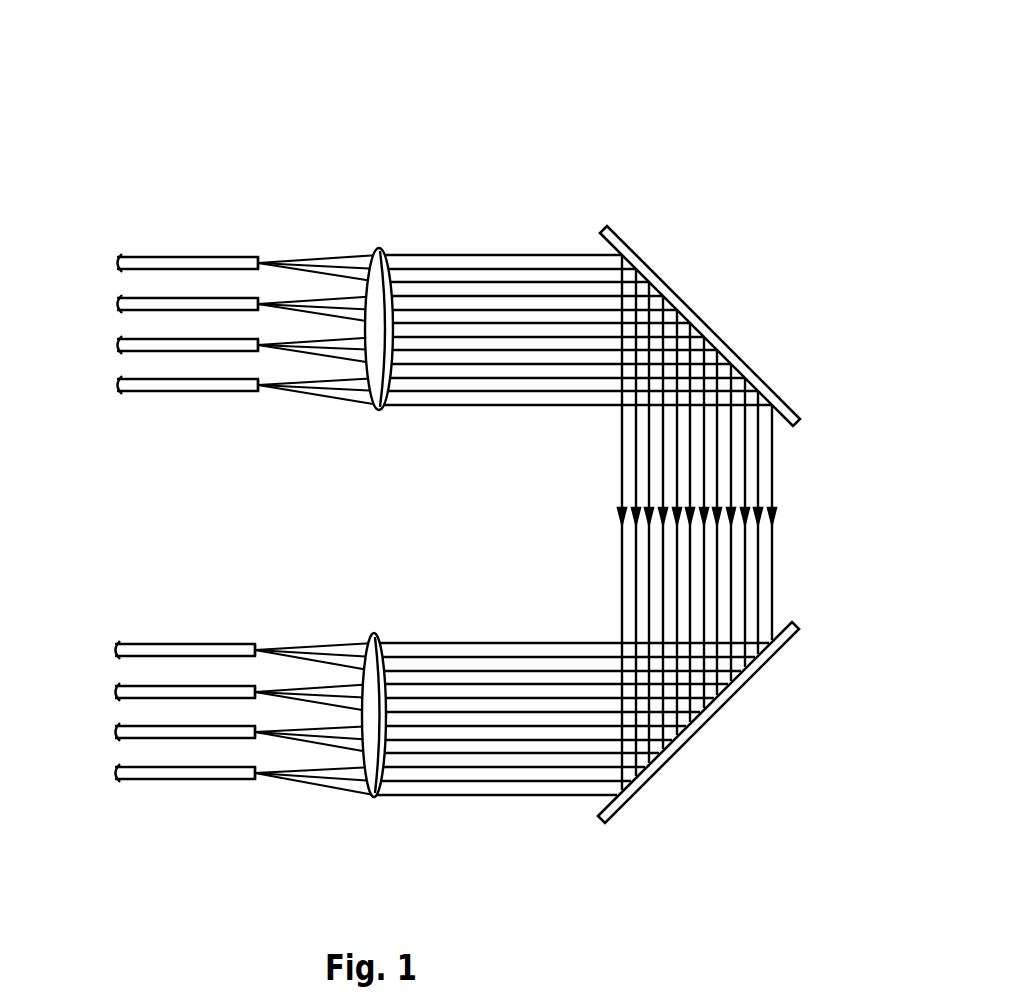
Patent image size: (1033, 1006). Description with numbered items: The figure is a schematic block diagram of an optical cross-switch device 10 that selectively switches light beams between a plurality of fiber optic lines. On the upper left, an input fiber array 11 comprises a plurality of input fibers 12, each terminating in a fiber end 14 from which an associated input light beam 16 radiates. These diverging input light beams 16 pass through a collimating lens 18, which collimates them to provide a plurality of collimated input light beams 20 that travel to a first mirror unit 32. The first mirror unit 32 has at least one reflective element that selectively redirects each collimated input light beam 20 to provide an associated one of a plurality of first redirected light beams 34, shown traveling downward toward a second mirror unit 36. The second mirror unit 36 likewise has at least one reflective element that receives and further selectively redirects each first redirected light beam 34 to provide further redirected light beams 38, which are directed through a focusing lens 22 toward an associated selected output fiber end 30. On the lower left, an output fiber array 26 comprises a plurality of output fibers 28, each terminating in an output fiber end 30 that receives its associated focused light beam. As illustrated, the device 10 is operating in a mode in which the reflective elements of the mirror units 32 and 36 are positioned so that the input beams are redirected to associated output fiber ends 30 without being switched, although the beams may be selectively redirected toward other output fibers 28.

The optical cross-switch device 10 is at (716, 79).
The input fiber array 11 is at (104, 222).
The input fibers 12 is at (140, 258).
The fiber end 14 is at (265, 256).
The input light beam 16 is at (328, 257).
The collimating lens 18 is at (380, 247).
The collimated input light beams 20 is at (460, 255).
The focusing lens 22 is at (380, 637).
The output fiber array 26 is at (84, 600).
The output fibers 28 is at (178, 643).
The output fiber end 30 is at (260, 647).
The first mirror unit 32 is at (693, 310).
The first redirected light beams 34 is at (618, 462).
The second mirror unit 36 is at (717, 720).
The further redirected light beams 38 is at (510, 797).